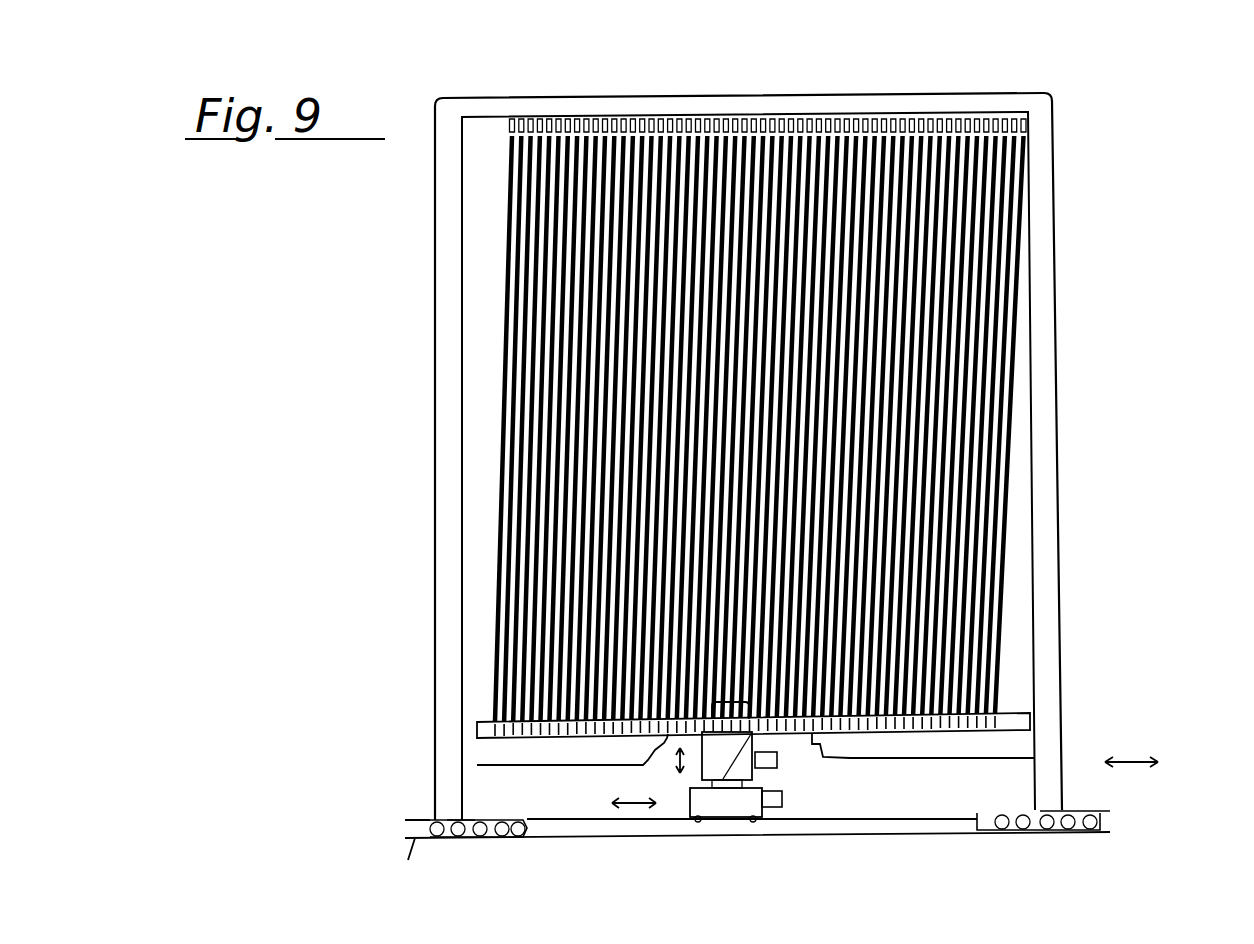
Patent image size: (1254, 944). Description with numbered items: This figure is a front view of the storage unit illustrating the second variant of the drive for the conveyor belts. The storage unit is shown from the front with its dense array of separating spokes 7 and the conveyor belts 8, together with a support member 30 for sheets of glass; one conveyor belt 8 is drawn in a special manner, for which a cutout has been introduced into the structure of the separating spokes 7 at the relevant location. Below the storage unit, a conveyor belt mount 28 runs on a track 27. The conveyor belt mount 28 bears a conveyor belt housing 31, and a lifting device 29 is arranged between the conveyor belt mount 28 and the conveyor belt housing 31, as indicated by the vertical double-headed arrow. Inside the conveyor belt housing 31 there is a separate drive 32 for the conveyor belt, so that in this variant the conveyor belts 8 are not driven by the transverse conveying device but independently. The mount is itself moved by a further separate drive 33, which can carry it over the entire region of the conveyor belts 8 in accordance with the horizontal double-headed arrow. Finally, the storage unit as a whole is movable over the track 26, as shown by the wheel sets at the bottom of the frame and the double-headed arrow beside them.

The separating spokes 7 is at (990, 178).
The conveyor belts 8 is at (710, 713).
The track 26 is at (1100, 817).
The track 27 is at (830, 824).
The conveyor belt mount 28 is at (690, 792).
The lifting device 29 is at (760, 718).
The support member 30 is at (1000, 712).
The conveyor belt housing 31 is at (727, 750).
The separate drive 32 is at (768, 752).
The separate drive 33 is at (782, 799).